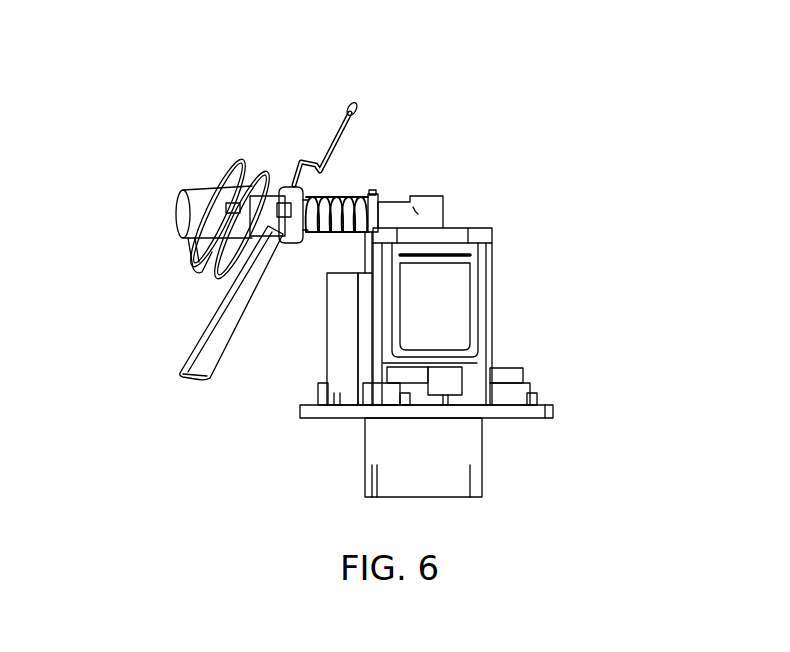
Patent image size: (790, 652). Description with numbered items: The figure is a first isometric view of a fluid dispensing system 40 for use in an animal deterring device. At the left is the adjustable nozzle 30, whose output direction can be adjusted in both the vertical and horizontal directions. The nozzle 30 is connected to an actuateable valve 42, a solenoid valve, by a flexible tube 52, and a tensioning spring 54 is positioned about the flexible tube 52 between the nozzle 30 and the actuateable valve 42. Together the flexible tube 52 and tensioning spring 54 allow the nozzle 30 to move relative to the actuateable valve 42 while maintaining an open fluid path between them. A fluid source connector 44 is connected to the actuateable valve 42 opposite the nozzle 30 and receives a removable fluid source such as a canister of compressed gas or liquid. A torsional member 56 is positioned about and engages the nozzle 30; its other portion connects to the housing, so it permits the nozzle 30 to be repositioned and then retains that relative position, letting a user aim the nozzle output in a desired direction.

The nozzle 30 is at (183, 190).
The fluid dispensing system 40 is at (593, 112).
The actuateable valve 42 is at (460, 302).
The fluid source connector 44 is at (478, 448).
The flexible tube 52 is at (325, 200).
The tensioning spring 54 is at (347, 200).
The torsional member 56 is at (240, 158).